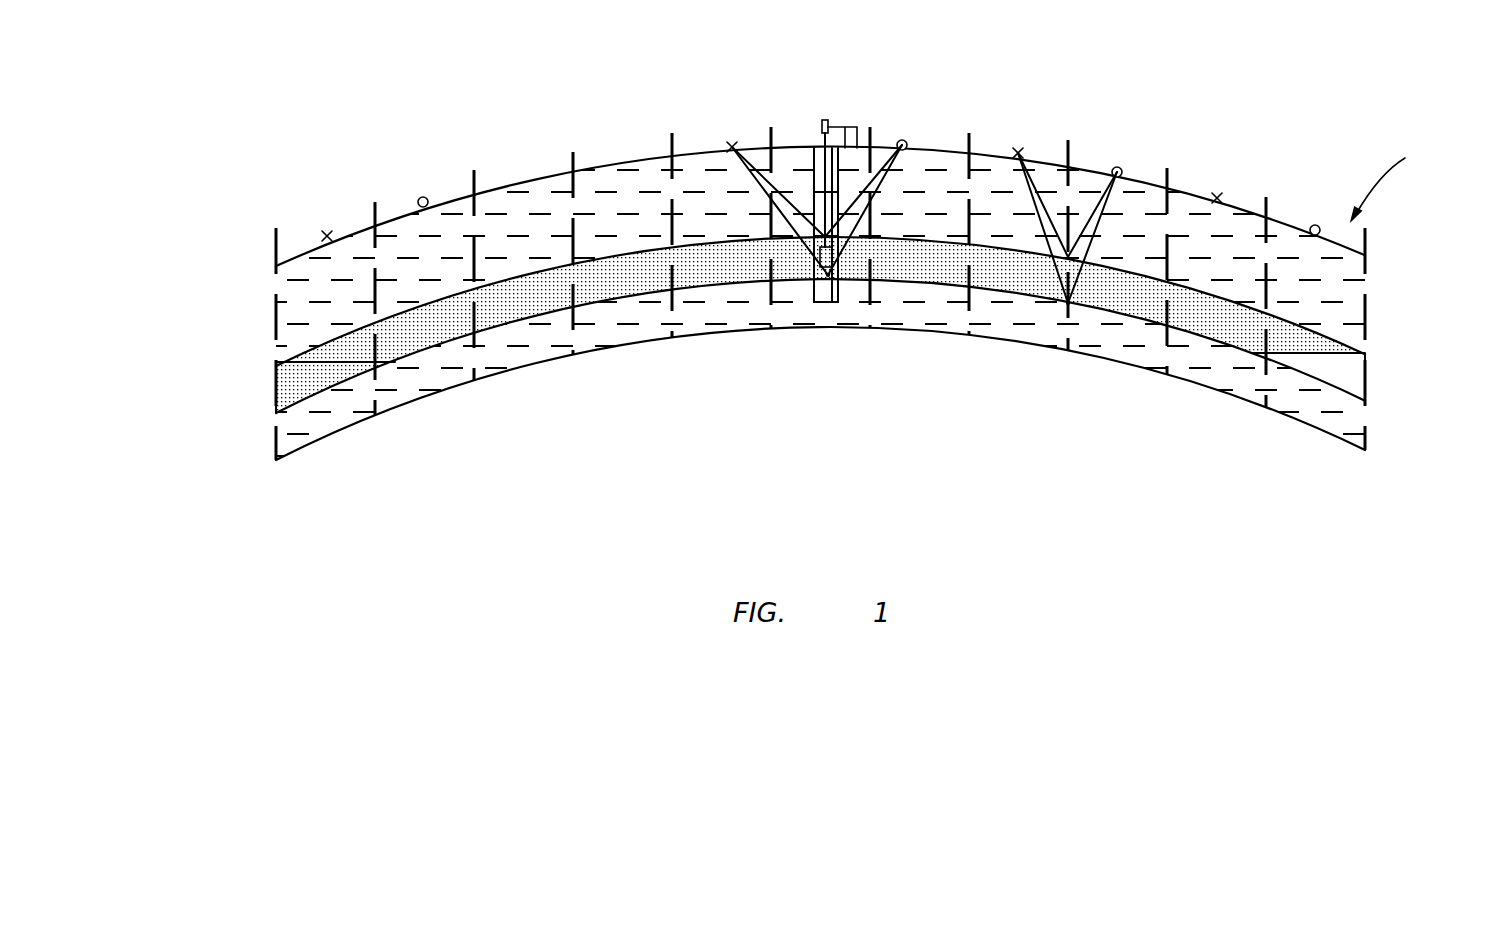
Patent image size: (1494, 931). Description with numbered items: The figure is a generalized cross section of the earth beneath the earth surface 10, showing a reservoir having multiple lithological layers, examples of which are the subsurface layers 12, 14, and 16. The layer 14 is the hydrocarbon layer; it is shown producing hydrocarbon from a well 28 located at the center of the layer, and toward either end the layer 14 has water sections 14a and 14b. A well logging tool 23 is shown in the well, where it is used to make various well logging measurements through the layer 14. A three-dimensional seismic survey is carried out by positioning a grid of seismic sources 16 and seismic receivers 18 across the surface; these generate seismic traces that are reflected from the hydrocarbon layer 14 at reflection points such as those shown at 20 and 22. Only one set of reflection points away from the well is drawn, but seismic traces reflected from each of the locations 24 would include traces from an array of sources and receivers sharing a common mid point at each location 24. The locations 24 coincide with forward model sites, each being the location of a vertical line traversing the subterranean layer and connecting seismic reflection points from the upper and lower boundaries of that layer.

The earth surface 10 is at (1396, 180).
The subsurface layer 12 is at (638, 222).
The hydrocarbon layer 14 is at (642, 288).
The water section 14a is at (276, 402).
The water section 14b is at (1365, 383).
The seismic sources 16 is at (652, 330).
The seismic receivers 18 is at (425, 197).
The seismic reflection point 20 is at (828, 276).
The seismic reflection point 22 is at (814, 230).
The well logging tool 23 is at (817, 265).
The forward model site locations 24 is at (276, 240).
The well 28 is at (837, 127).